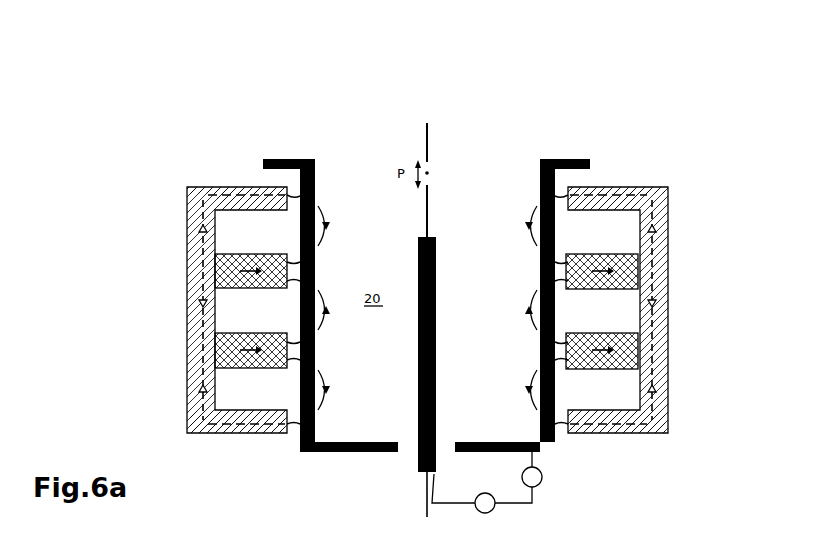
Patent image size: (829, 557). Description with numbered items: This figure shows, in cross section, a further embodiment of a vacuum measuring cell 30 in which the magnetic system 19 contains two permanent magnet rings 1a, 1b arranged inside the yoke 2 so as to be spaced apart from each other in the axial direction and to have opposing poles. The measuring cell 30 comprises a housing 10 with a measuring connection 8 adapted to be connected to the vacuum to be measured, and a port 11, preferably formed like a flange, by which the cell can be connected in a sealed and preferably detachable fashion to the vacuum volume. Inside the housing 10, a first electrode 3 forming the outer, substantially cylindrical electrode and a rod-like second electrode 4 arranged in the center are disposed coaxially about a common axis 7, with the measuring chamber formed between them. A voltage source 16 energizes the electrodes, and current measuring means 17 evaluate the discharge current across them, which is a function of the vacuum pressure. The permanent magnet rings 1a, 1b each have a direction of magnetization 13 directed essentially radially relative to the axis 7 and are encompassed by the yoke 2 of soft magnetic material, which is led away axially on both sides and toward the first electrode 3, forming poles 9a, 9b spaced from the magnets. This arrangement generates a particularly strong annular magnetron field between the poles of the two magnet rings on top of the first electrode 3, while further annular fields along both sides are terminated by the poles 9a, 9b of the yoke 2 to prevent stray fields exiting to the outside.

The permanent magnet ring 1a is at (243, 285).
The permanent magnet ring 1b is at (262, 335).
The yoke 2 is at (222, 420).
The first electrode 3 is at (312, 346).
The second electrode 4 is at (437, 356).
The common axis 7 is at (433, 155).
The measuring connection 8 is at (390, 147).
The pole of the yoke 9a is at (290, 196).
The pole of the yoke 9b is at (280, 428).
The housing 10 is at (547, 160).
The port 11 is at (566, 160).
The direction of magnetization 13 is at (258, 262).
The voltage source 16 is at (471, 513).
The current measuring means 17 is at (541, 488).
The magnetic system 19 is at (672, 158).
The vacuum measuring cell 30 is at (494, 63).